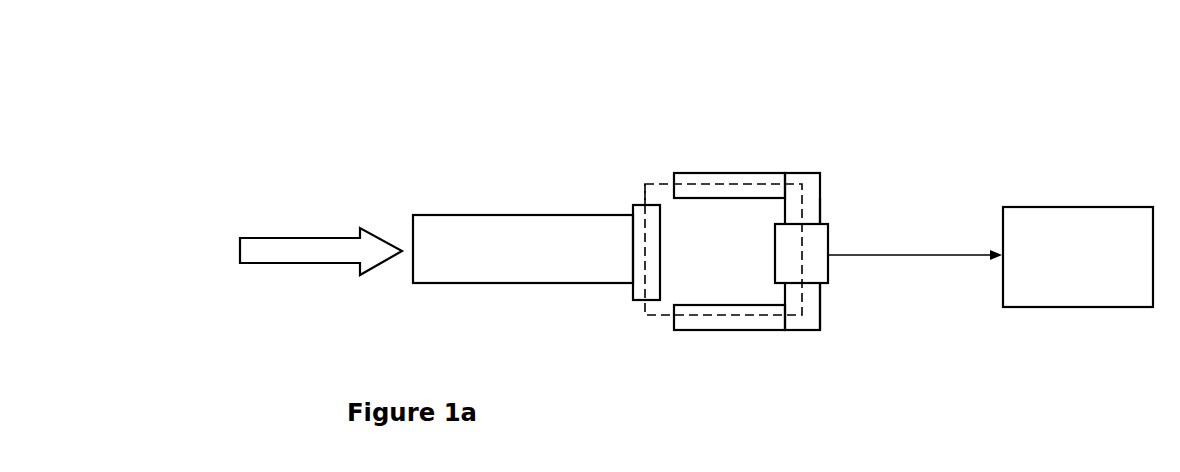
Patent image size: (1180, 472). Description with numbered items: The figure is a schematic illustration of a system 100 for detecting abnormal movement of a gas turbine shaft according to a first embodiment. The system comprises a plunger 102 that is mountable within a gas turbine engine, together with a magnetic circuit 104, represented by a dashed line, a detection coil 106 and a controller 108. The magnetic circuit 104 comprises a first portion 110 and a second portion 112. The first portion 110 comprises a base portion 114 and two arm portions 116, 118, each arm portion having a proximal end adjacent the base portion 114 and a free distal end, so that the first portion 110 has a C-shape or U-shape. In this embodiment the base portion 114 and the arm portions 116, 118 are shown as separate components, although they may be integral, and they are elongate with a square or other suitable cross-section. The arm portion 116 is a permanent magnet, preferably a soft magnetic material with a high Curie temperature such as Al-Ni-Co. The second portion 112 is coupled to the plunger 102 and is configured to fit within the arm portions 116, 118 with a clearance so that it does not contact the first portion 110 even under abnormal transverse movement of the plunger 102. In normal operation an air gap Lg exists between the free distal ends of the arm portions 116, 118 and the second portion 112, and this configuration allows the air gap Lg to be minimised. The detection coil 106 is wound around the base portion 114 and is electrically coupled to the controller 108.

The optical measurement system 100 is at (807, 196).
The plunger 102 is at (520, 196).
The magnetic circuit 104 is at (723, 306).
The detection coil 106 is at (871, 302).
The controller 108 is at (1078, 207).
The first portion 110 is at (812, 194).
The second portion 112 is at (589, 195).
The base portion 114 is at (873, 313).
The arm portion 116 is at (723, 114).
The arm portion 118 is at (763, 377).
The air gap Lg is at (631, 130).